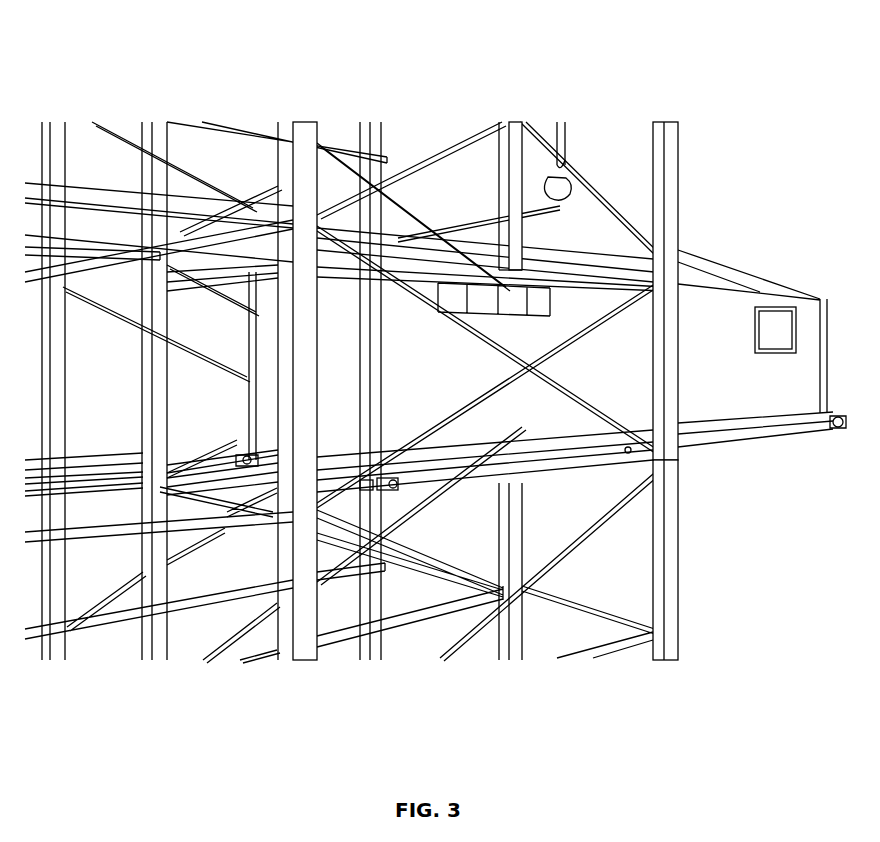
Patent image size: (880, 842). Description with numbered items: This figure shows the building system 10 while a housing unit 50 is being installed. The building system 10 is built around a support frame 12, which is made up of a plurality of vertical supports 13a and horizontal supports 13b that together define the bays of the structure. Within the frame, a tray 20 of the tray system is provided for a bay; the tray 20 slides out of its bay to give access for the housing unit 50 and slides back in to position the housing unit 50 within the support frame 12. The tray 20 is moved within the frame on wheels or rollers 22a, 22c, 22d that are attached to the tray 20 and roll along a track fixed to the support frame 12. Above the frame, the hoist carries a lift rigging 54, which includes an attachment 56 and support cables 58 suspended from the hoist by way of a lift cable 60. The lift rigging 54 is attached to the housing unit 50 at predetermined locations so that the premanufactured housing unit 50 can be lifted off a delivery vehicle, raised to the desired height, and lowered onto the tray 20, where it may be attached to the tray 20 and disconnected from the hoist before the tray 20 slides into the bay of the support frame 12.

The building system 10 is at (436, 339).
The support frame 12 is at (668, 128).
The vertical supports 13a is at (676, 580).
The horizontal supports 13b is at (584, 468).
The tray 20 is at (722, 437).
The roller 22a is at (246, 456).
The roller 22c is at (840, 428).
The roller 22d is at (401, 485).
The housing unit 50 is at (795, 270).
The lift rigging 54 is at (590, 165).
The attachment 56 is at (548, 180).
The support cables 58 is at (468, 222).
The lift cable 60 is at (557, 148).